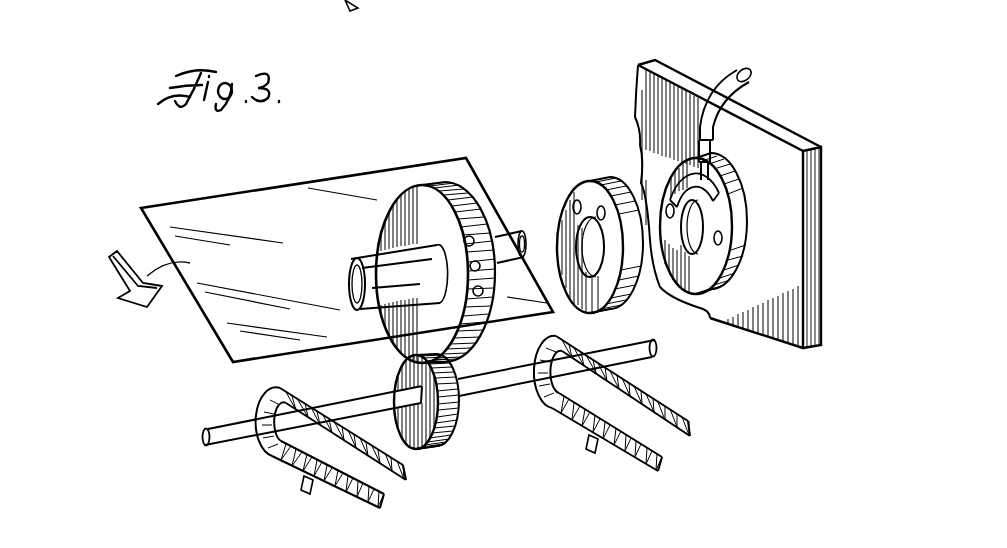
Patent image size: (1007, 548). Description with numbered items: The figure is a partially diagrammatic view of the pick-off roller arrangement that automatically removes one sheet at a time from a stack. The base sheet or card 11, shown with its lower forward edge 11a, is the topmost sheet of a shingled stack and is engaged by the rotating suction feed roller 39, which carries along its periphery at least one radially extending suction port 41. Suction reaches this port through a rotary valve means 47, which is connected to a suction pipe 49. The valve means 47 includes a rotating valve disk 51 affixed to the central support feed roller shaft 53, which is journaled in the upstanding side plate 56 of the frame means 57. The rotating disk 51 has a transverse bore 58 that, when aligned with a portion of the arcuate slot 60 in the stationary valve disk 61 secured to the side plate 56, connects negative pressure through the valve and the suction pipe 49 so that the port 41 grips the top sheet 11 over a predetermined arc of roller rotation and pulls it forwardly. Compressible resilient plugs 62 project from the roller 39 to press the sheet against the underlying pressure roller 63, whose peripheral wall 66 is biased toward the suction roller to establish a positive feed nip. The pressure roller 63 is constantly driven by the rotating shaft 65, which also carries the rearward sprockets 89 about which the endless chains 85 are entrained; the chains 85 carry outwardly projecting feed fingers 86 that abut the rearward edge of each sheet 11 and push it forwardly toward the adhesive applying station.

The base sheet or card 11 is at (326, 236).
The lower forward edges 11a is at (181, 200).
The suction feed roller 39 is at (458, 192).
The suction port 41 is at (474, 236).
The rotary valve means 47 is at (587, 112).
The suction pipe 49 is at (748, 66).
The rotating valve disk 51 is at (562, 230).
The central support feed roller shaft 53 is at (355, 281).
The side plate 56 is at (806, 250).
The frame means 57 is at (826, 235).
The transverse bore 58 is at (566, 222).
The arcuate slot 60 is at (715, 197).
The stationary valve disk 61 is at (710, 268).
The resilient plugs 62 is at (481, 296).
The pressure roller 63 is at (439, 445).
The rotating shaft 65 is at (514, 380).
The peripheral wall 66 is at (456, 418).
The chains 85 is at (333, 490).
The feed fingers 86 is at (300, 486).
The rearward sprocket 89 is at (279, 460).